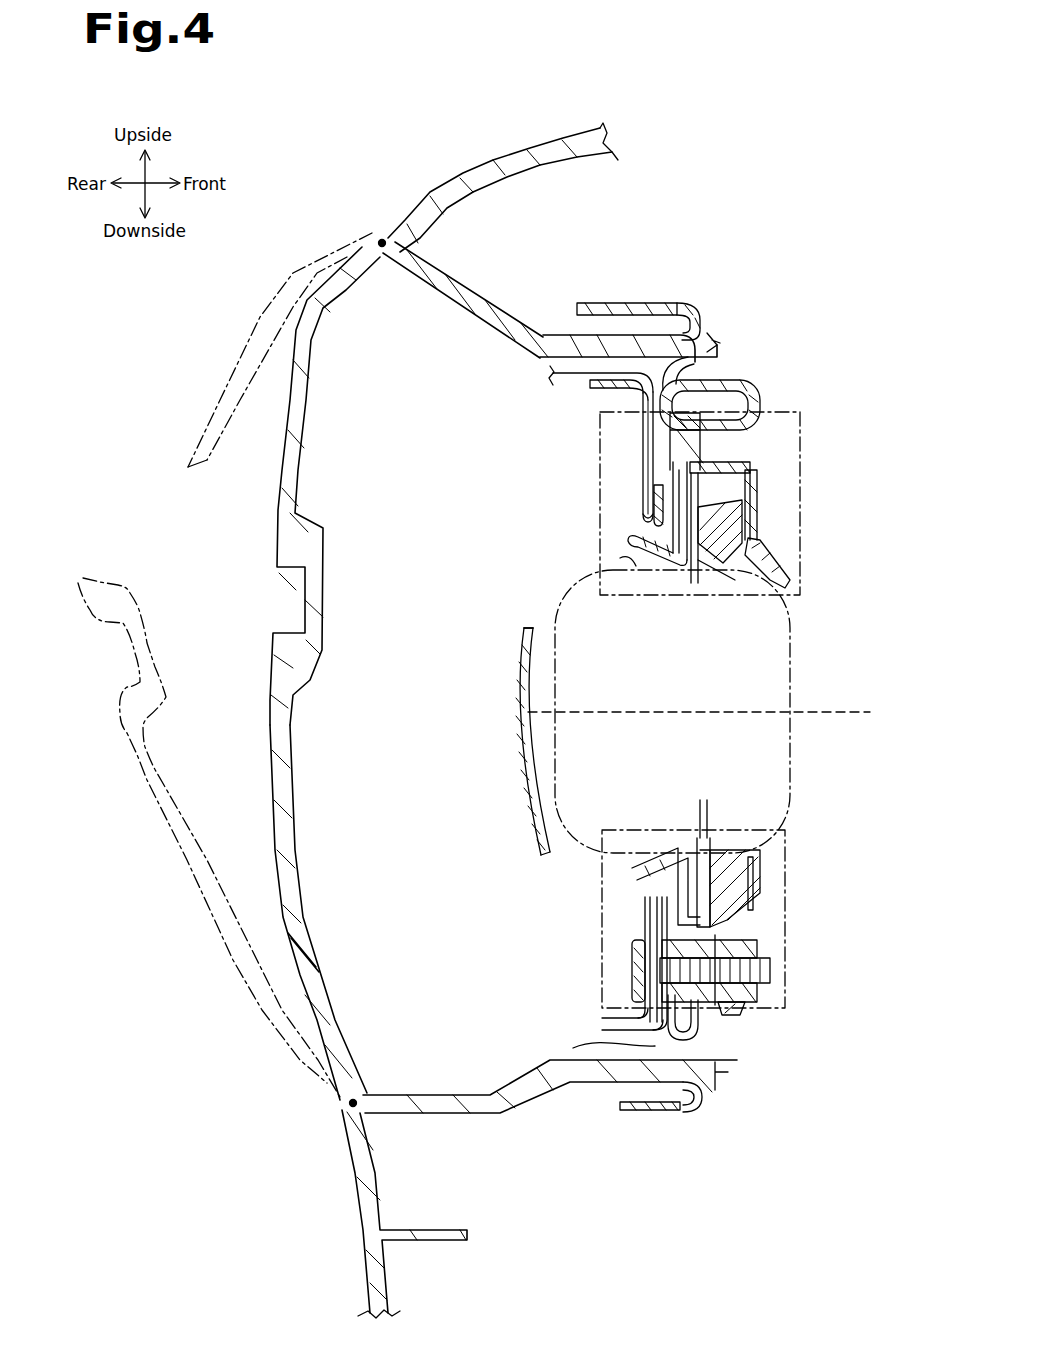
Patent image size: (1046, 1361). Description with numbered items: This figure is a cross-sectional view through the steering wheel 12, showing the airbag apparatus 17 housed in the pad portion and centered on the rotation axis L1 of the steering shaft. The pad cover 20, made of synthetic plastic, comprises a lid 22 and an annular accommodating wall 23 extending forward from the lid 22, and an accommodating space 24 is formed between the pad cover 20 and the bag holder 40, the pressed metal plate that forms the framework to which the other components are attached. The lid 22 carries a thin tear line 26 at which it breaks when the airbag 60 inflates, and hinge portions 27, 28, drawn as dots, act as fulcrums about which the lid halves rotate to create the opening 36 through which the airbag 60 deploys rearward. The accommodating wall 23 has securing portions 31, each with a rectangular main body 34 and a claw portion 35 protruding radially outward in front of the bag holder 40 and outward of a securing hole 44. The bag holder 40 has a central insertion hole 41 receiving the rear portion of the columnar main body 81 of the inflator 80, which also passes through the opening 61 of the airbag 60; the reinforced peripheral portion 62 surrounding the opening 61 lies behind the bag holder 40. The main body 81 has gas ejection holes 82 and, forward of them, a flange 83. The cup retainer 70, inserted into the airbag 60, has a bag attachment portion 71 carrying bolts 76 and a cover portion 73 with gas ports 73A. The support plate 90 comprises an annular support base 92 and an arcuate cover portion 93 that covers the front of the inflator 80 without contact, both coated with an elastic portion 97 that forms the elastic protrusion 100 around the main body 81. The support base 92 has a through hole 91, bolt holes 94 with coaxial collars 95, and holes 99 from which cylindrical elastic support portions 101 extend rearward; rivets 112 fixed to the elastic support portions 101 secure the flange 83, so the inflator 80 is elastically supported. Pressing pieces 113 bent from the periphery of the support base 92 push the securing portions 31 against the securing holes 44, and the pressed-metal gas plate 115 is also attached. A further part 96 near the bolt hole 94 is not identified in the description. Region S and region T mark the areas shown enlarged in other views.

The steering wheel 12 is at (340, 188).
The hinge portion 28 is at (382, 238).
The accommodating wall 23 is at (550, 705).
The bag holder 40 is at (577, 309).
The securing portion 31 is at (639, 714).
The main body 34 is at (600, 343).
The claw portion 35 is at (677, 315).
The securing hole 44 is at (732, 709).
The pressing piece 113 is at (700, 365).
The region S is at (800, 412).
The peripheral portion 62 is at (640, 432).
The bag attachment portion 71 is at (640, 466).
The rivet 112 is at (700, 440).
The hole 99 is at (752, 475).
The elastic support portion 101 is at (763, 500).
The cover portion 93 is at (765, 537).
The support plate 90 is at (776, 537).
The through hole 91 is at (790, 585).
The airbag apparatus 17 is at (510, 480).
The insertion hole 41 is at (640, 518).
The opening 61 is at (637, 500).
The gas plate 115 is at (627, 540).
The main body 81 is at (562, 592).
The inflator 80 is at (610, 692).
The gas ejection hole 82 is at (620, 572).
The flange 83 is at (708, 585).
The elastic protrusion 100 is at (735, 582).
The tear line 26 is at (297, 520).
The opening 36 is at (167, 547).
The gas port 73A is at (524, 628).
The cover portion 73 is at (518, 798).
The cup retainer 70 is at (475, 742).
The accommodating space 24 is at (420, 755).
The lid 22 is at (275, 848).
The pad cover 20 is at (337, 1021).
The rotation axis L1 is at (820, 712).
The elastic portion 97 is at (762, 858).
The region T is at (786, 922).
The bolt 76 is at (633, 968).
The bolt hole 94 is at (771, 967).
The washer 96 is at (758, 997).
The support base 92 is at (733, 1008).
The collar 95 is at (700, 1028).
The airbag 60 is at (523, 1058).
The hinge portion 27 is at (348, 1104).